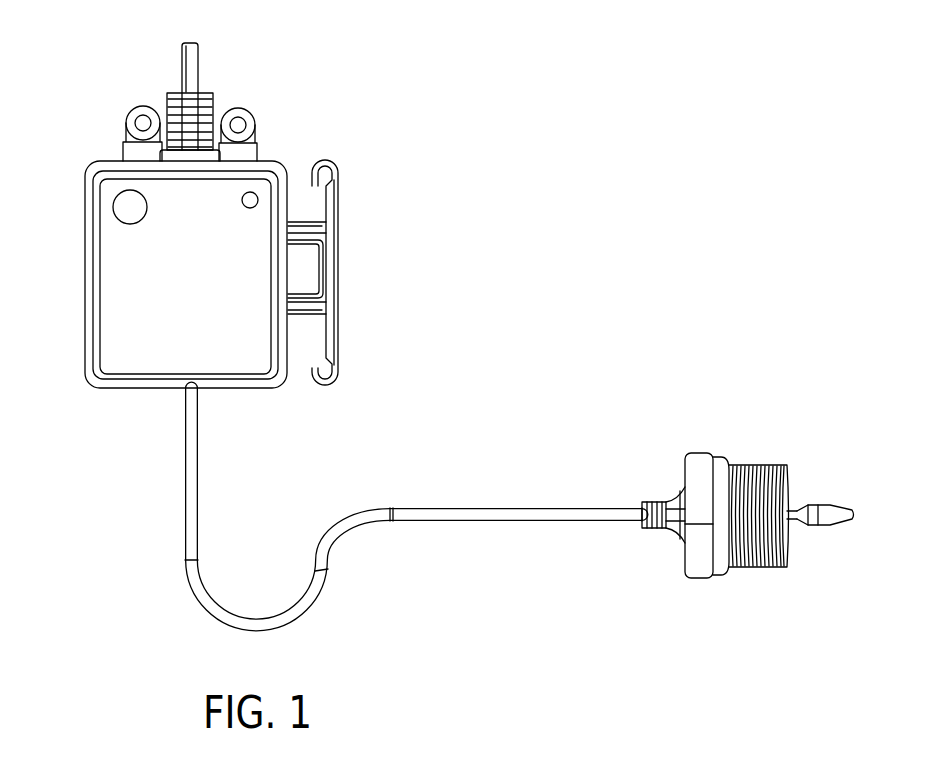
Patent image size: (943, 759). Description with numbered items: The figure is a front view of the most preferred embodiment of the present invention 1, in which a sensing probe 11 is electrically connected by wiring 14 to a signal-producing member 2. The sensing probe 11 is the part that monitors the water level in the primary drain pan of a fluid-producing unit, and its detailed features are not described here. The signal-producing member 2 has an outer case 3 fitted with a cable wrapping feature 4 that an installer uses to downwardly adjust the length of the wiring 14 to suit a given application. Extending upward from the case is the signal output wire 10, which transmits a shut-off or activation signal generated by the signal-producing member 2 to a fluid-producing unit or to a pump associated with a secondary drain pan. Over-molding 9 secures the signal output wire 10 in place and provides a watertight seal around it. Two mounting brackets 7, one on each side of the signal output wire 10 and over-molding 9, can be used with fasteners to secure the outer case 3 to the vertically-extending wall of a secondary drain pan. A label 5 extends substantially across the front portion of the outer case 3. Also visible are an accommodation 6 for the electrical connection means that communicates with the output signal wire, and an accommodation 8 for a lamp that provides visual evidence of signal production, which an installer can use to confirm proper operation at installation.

The present invention 1 is at (621, 179).
The signal-producing member 2 is at (230, 346).
The outer case 3 is at (262, 407).
The cable wrapping feature 4 is at (353, 377).
The label 5 is at (105, 327).
The accommodation 6 is at (115, 207).
The mounting brackets 7 is at (118, 120).
The accommodation 8 is at (274, 196).
The over-molding 9 is at (221, 104).
The signal output wire 10 is at (177, 55).
The sensing probe 11 is at (684, 628).
The wiring 14 is at (495, 499).